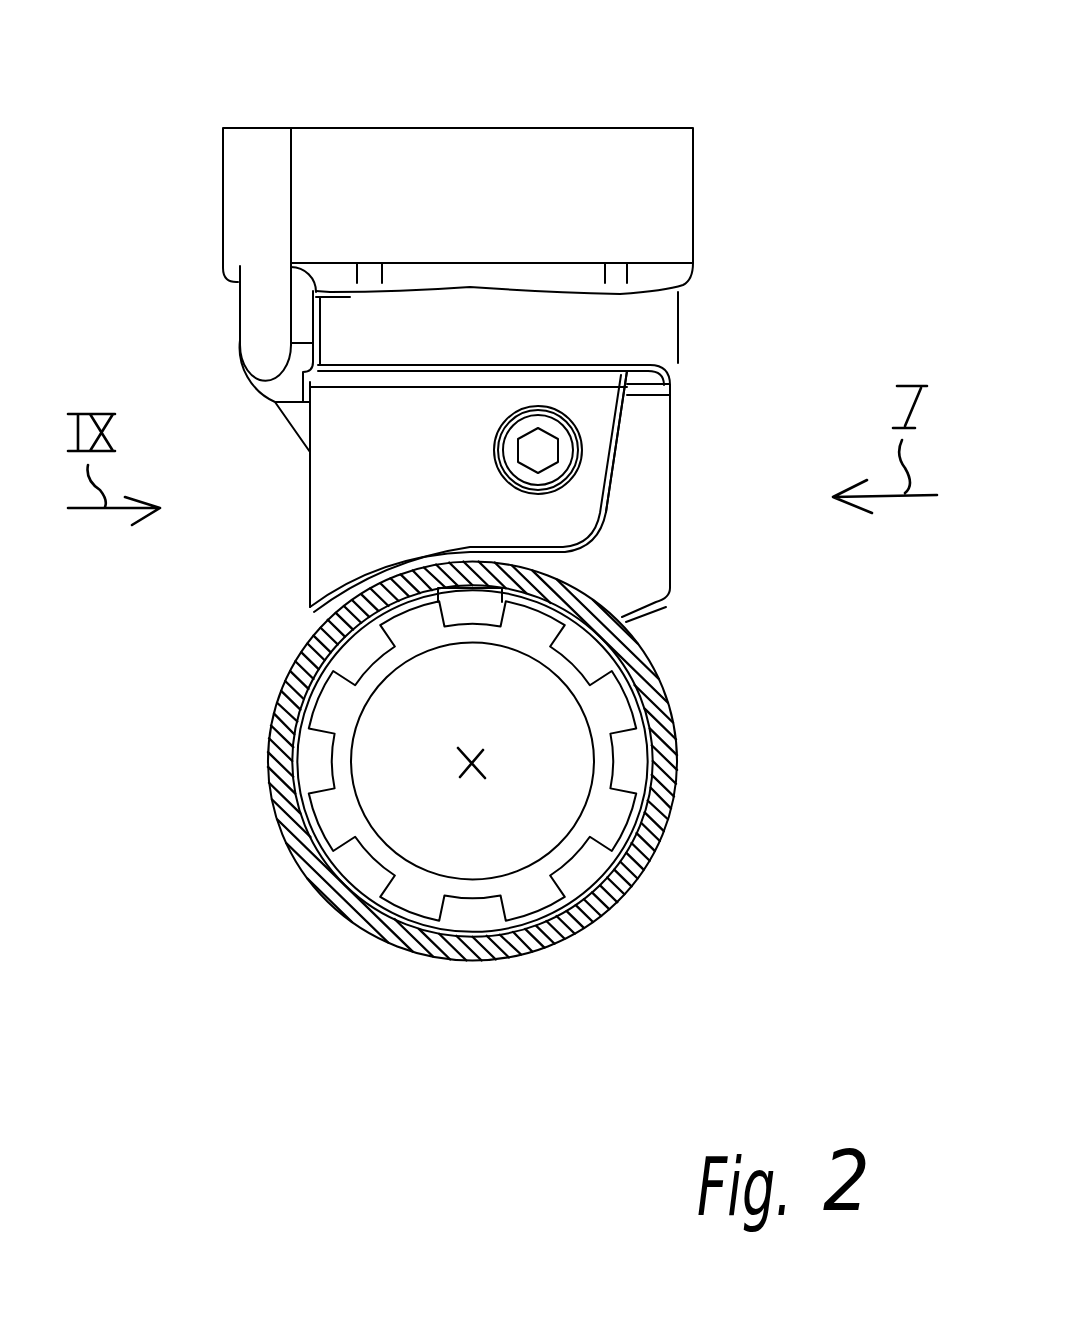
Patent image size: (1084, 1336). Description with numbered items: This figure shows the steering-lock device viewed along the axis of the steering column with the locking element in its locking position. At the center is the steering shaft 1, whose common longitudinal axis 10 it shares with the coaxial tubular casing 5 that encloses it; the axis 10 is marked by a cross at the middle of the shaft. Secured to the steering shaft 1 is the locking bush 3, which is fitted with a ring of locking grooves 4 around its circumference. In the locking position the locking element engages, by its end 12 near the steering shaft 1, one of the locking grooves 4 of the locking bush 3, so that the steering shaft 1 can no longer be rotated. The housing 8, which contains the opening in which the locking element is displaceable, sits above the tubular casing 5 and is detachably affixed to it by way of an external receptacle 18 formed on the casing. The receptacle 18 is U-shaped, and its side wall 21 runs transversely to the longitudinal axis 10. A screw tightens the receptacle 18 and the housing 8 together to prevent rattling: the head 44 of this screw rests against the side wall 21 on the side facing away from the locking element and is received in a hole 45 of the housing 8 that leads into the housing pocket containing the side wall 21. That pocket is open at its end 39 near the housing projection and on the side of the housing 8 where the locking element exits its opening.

The steering shaft 1 is at (550, 790).
The locking bush 3 is at (332, 817).
The locking grooves 4 is at (363, 868).
The tubular casing 5 is at (372, 917).
The housing 8 is at (468, 156).
The longitudinal axis 10 is at (487, 762).
The end 12 is at (473, 592).
The receptacle 18 is at (708, 497).
The side wall 21 is at (640, 562).
The end 39 is at (620, 446).
The head 44 is at (527, 428).
The hole 45 is at (522, 492).